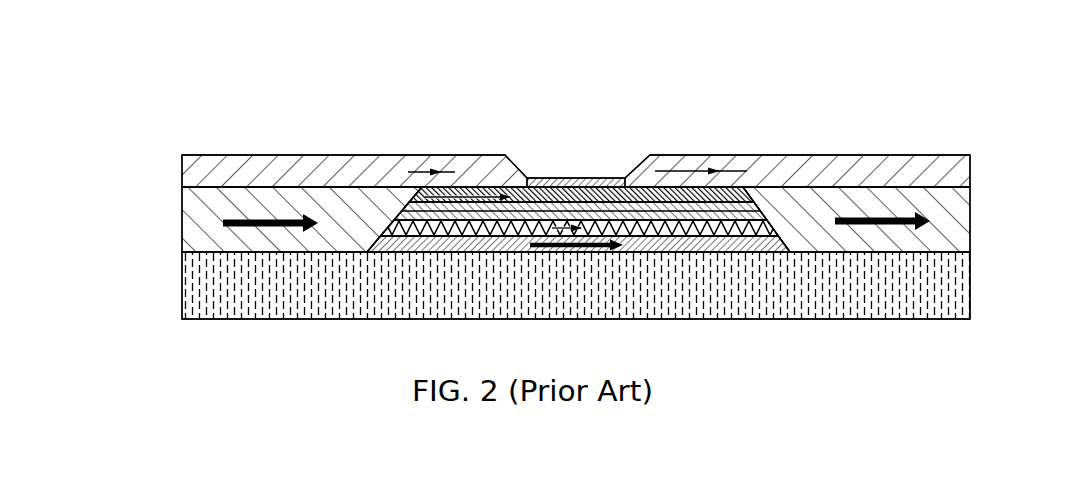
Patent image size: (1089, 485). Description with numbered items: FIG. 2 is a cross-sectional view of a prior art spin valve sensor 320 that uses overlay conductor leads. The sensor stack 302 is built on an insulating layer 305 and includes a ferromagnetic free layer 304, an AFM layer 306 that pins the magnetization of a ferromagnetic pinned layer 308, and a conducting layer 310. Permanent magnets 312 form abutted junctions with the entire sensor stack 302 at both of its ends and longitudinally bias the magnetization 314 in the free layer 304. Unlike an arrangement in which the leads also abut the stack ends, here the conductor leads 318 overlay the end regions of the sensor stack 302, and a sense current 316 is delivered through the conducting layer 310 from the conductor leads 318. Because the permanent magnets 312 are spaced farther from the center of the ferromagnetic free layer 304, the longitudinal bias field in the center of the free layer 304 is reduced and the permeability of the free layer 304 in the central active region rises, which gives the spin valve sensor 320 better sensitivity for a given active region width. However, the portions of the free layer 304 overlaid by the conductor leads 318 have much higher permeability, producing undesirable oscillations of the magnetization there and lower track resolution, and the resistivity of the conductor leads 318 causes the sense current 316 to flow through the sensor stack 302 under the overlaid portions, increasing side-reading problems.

The sensor stack 302 is at (567, 166).
The ferromagnetic free layer 304 is at (728, 248).
The insulating layer 305 is at (955, 288).
The AFM layer 306 is at (425, 196).
The ferromagnetic pinned layer 308 is at (742, 206).
The conducting layer 310 is at (403, 232).
The permanent magnets 312 is at (195, 214).
The magnetization 314 is at (556, 250).
The sense current 316 is at (473, 174).
The conductor leads 318 is at (218, 165).
The spin valve sensor 320 is at (737, 133).